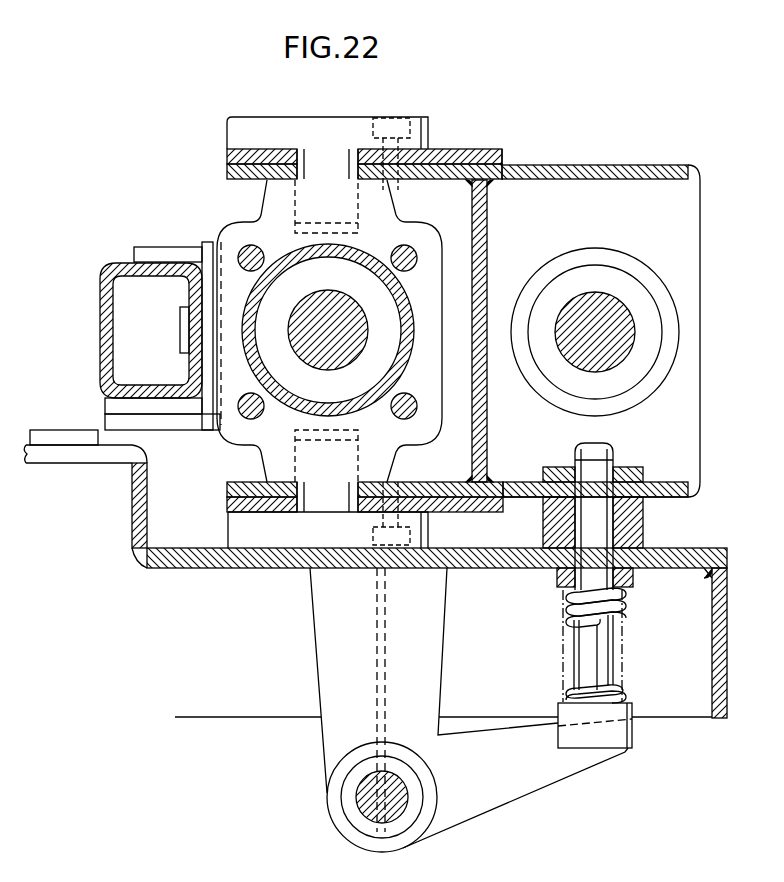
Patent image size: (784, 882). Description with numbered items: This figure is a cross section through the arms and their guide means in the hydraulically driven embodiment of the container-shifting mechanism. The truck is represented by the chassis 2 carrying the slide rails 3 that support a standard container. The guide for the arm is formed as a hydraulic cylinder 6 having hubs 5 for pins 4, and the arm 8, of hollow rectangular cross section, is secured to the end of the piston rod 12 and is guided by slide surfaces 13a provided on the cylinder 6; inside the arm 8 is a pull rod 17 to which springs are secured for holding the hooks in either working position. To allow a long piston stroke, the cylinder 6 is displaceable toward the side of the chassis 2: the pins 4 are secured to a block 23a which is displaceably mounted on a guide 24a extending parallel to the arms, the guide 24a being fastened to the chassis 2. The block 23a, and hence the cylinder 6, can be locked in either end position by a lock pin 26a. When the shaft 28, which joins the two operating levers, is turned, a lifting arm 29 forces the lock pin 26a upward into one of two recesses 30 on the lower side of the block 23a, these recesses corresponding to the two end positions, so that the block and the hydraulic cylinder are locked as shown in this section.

The chassis 2 is at (92, 458).
The slide rails 3 is at (63, 437).
The pins 4 is at (318, 165).
The hubs 5 is at (273, 200).
The hydraulic cylinder 6 is at (237, 233).
The arms 8 is at (122, 287).
The piston rod 12 is at (300, 345).
The slide surfaces 13a is at (168, 252).
The pull rods 17 is at (181, 320).
The block 23a is at (581, 165).
The guide 24a is at (604, 310).
The lock pin 26a is at (602, 653).
The shaft 28 is at (360, 795).
The lifting arm 29 is at (519, 790).
The recesses 30 is at (630, 470).